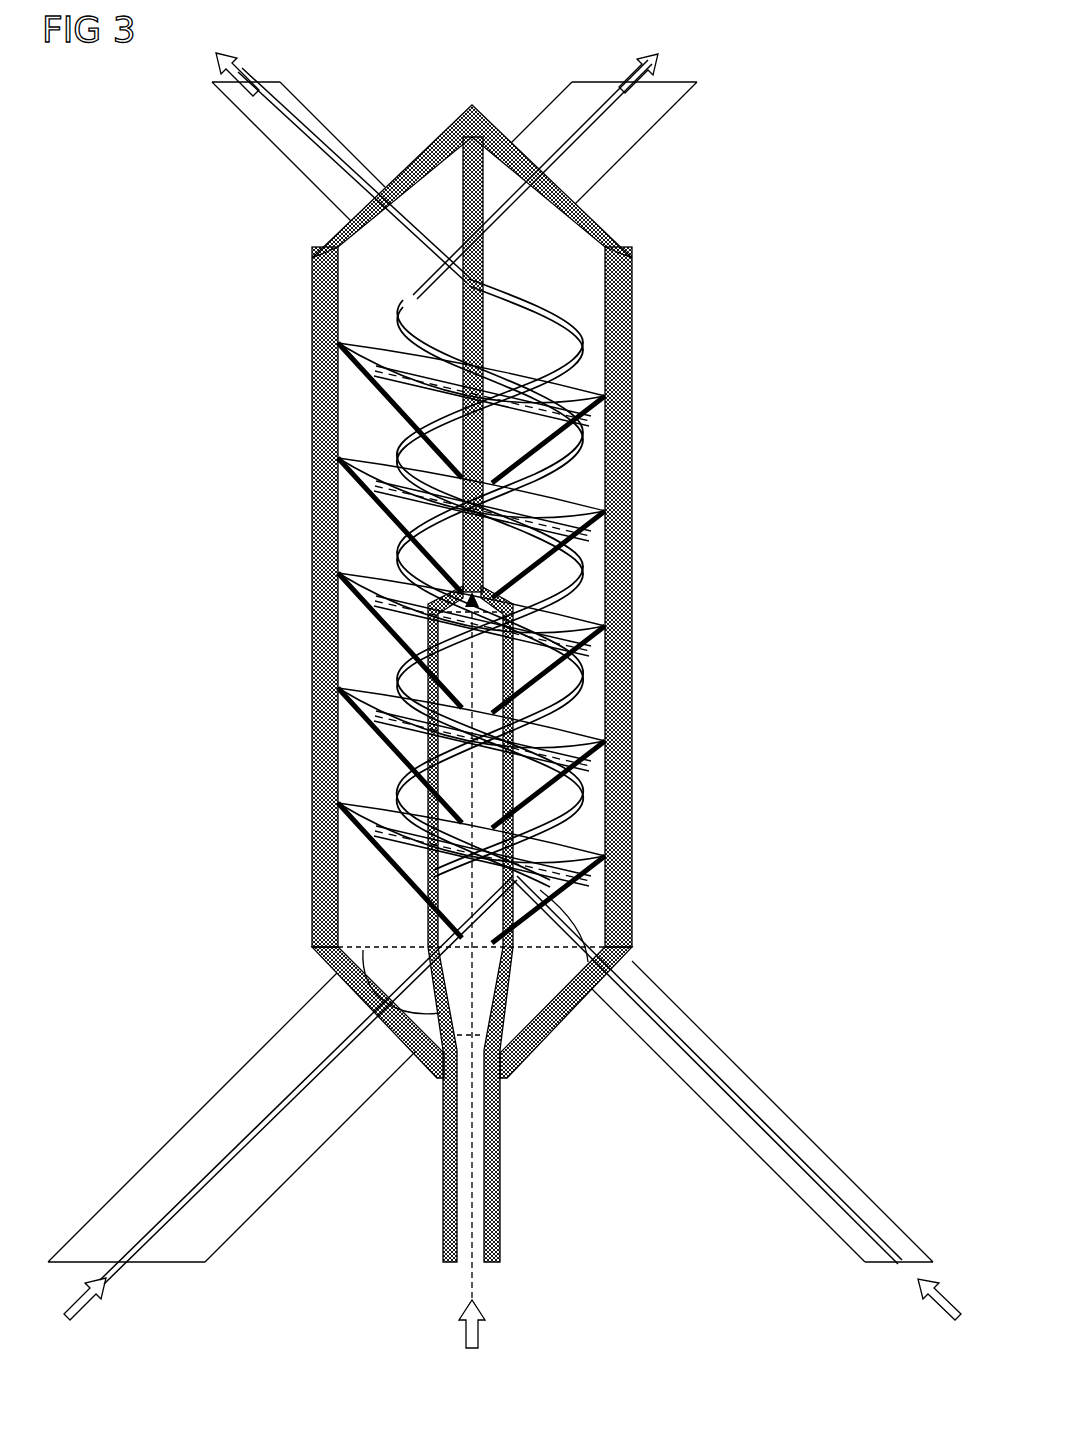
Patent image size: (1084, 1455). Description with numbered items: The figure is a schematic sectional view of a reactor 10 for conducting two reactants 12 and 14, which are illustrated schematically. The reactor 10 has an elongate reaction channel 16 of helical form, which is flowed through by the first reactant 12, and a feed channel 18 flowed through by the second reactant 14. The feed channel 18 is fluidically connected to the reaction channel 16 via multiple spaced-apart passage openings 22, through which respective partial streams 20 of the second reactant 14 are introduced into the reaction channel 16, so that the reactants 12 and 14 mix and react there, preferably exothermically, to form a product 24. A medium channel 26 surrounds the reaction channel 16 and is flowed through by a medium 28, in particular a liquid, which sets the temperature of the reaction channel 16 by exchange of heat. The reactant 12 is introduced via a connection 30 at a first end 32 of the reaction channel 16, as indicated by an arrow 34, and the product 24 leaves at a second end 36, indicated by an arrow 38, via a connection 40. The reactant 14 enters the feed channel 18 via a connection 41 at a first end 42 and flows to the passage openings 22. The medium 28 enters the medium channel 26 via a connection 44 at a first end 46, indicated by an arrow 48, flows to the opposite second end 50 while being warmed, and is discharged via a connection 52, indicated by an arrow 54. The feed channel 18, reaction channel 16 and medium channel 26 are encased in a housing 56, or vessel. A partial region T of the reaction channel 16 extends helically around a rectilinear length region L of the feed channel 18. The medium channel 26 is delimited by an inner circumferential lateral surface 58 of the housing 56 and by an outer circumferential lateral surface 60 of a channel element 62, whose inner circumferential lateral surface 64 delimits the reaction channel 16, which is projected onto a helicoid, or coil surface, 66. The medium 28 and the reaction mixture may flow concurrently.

The reactor 10 is at (622, 224).
The first reactant 12 is at (752, 1120).
The second reactant 14 is at (500, 1166).
The reaction channel 16 is at (312, 740).
The feed channel 18 is at (500, 967).
The partial streams 20 is at (605, 622).
The passage openings 22 is at (545, 602).
The product 24 is at (318, 143).
The medium channel 26 is at (592, 260).
The medium 28 is at (590, 113).
The connection 30 is at (790, 1194).
The first end 32 is at (632, 919).
The arrow 34 is at (942, 1300).
The second end 36 is at (348, 208).
The arrow 38 is at (240, 70).
The connection 40 is at (246, 118).
The connection 41 is at (500, 1214).
The first end 42 is at (438, 1088).
The connection 44 is at (248, 1218).
The first end 46 is at (385, 972).
The arrow 48 is at (80, 1313).
The second end 50 is at (560, 176).
The connection 52 is at (672, 108).
The arrow 54 is at (632, 80).
The housing 56 is at (482, 1336).
The inner circumferential lateral surface 58 is at (600, 292).
The outer circumferential lateral surface 60 is at (605, 408).
The channel element 62 is at (605, 541).
The inner circumferential lateral surface 64 is at (605, 453).
The helicoid 66 is at (582, 374).
The partial region T is at (632, 781).
The length region L is at (612, 873).